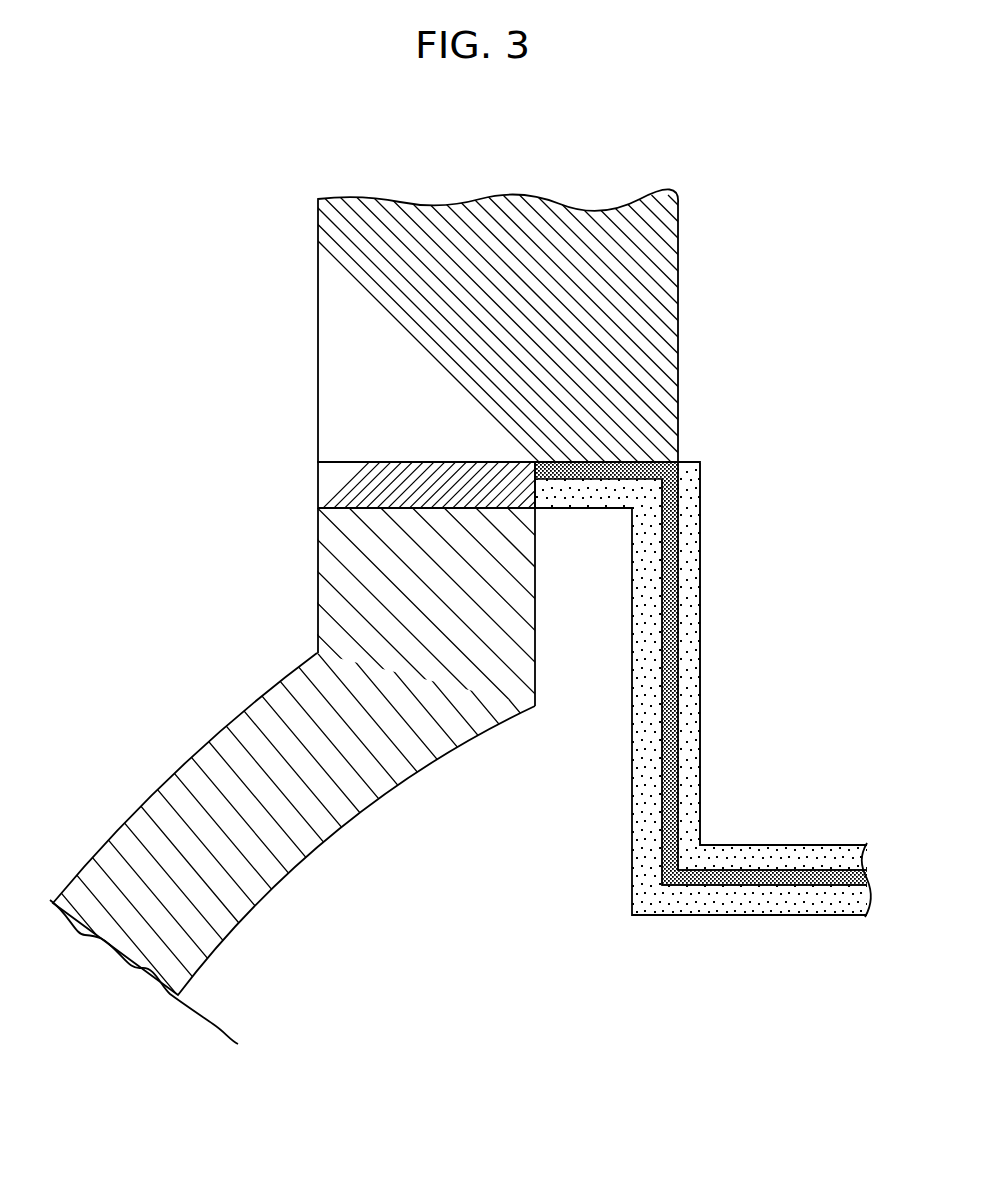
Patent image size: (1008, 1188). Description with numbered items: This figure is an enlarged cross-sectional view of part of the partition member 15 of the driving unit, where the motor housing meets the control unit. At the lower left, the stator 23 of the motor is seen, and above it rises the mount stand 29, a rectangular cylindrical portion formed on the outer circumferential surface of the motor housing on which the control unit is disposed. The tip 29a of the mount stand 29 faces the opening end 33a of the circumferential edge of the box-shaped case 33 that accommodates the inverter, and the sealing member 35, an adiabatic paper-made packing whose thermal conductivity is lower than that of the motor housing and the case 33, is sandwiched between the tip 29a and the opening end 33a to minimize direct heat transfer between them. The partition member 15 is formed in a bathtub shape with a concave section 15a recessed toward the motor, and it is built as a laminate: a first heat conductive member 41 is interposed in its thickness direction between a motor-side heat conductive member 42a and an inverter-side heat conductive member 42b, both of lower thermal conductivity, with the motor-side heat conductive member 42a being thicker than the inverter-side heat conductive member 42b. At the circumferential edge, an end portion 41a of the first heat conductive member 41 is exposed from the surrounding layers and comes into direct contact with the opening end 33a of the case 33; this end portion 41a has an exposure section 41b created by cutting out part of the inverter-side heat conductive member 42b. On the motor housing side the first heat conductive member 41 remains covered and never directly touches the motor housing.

The partition member 15 is at (712, 458).
The concave section 15a is at (702, 840).
The stator 23 is at (190, 753).
The mount stand 29 is at (317, 591).
The tip of the mount stand 29a is at (363, 507).
The case 33 is at (318, 262).
The opening end 33a is at (372, 480).
The sealing member 35 is at (425, 478).
The first heat conductive member 41 is at (672, 658).
The end portion 41a is at (597, 475).
The exposure section 41b is at (650, 463).
The motor-side heat conductive member 42a is at (648, 725).
The inverter-side heat conductive member 42b is at (688, 600).